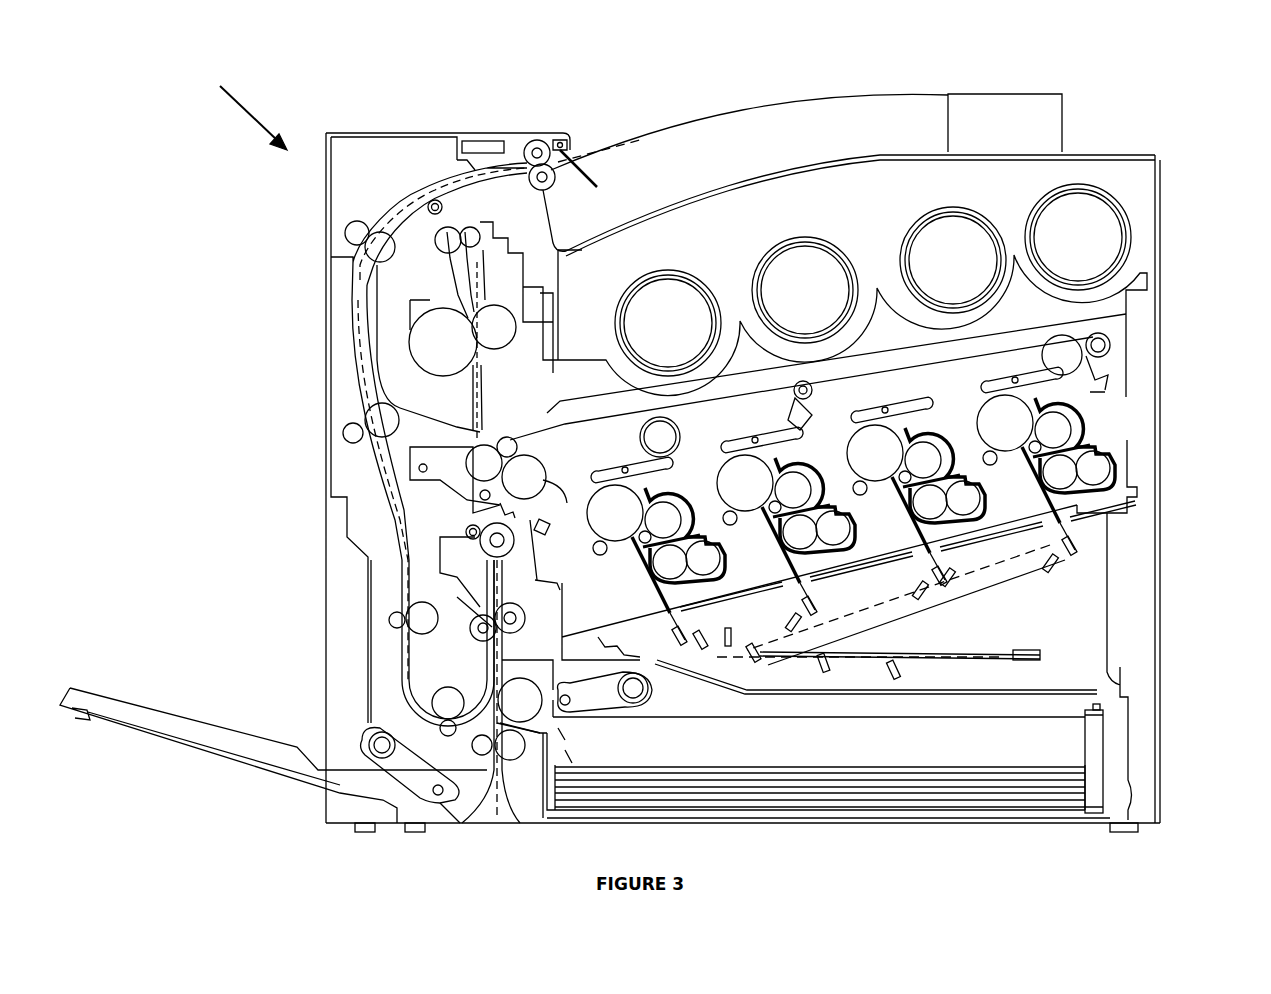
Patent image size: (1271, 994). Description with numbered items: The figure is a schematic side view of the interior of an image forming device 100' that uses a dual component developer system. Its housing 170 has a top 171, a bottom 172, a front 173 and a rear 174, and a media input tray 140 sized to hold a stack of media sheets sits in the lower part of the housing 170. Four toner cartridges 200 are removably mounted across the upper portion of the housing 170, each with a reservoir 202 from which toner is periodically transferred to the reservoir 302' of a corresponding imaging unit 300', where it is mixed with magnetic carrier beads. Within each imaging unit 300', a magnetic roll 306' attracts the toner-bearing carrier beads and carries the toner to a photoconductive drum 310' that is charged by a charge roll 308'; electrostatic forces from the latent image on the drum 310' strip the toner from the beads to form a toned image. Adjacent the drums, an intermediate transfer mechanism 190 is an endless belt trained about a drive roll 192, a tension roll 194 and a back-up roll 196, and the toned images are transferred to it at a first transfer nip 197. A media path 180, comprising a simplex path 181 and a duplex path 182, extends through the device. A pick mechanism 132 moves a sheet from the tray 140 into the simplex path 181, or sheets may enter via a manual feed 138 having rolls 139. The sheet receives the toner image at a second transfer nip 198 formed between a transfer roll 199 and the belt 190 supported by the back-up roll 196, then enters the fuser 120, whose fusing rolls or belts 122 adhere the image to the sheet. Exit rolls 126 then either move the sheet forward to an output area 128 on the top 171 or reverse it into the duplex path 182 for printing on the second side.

The image forming device 100' is at (234, 107).
The housing 170 is at (388, 133).
The exit rolls 126 is at (548, 140).
The output area 128 is at (673, 203).
The top 171 is at (990, 148).
The toner cartridge 200 is at (700, 273).
The reservoir 202 is at (873, 280).
The drive roll 192 is at (1127, 312).
The first transfer nip 197 is at (1016, 380).
The intermediate transfer mechanism 190 is at (860, 360).
The imaging unit 300' is at (1090, 593).
The magnetic roll 306' is at (1118, 445).
The reservoir 302' is at (1106, 446).
The photoconductive drum 310' is at (1069, 501).
The charge roll 308' is at (996, 509).
The duplex path 182 is at (350, 308).
The front 173 is at (326, 419).
The simplex path 181 is at (477, 398).
The fuser 120 is at (488, 365).
The fusing rolls or belts 122 is at (462, 340).
The second transfer nip 198 is at (497, 430).
The back-up roll 196 is at (518, 445).
The transfer roll 199 is at (473, 490).
The tension roll 194 is at (537, 510).
The manual feed 138 is at (310, 731).
The rolls 139 is at (455, 823).
The pick mechanism 132 is at (650, 690).
The media path 180 is at (565, 740).
The media input tray 140 is at (903, 765).
The bottom 172 is at (918, 823).
The rear 174 is at (1157, 592).